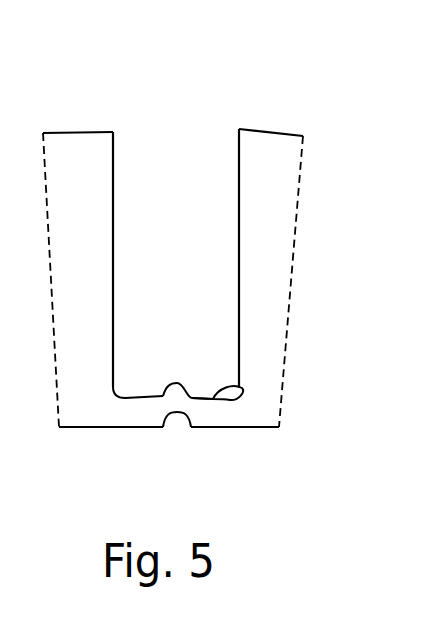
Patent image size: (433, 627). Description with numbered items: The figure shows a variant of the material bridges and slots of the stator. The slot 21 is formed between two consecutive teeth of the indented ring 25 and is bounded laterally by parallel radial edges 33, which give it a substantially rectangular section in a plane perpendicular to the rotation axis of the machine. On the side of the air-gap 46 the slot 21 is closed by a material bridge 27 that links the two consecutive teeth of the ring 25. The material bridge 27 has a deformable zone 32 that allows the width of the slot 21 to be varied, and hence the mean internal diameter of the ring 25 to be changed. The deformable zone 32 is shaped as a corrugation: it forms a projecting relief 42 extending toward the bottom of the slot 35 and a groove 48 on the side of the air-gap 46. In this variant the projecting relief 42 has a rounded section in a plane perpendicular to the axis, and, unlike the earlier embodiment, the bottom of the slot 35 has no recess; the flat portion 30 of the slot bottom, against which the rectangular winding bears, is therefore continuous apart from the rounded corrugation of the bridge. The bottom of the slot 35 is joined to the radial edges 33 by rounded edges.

The slot 21 is at (203, 279).
The indented ring 25 is at (300, 278).
The material bridge 27 is at (150, 410).
The flat portion 30 is at (242, 389).
The deformable zone 32 is at (163, 395).
The radial edge 33 is at (238, 212).
The bottom of the slot 35 is at (230, 400).
The projecting relief 42 is at (180, 382).
The air-gap 46 is at (253, 430).
The groove 48 is at (177, 416).